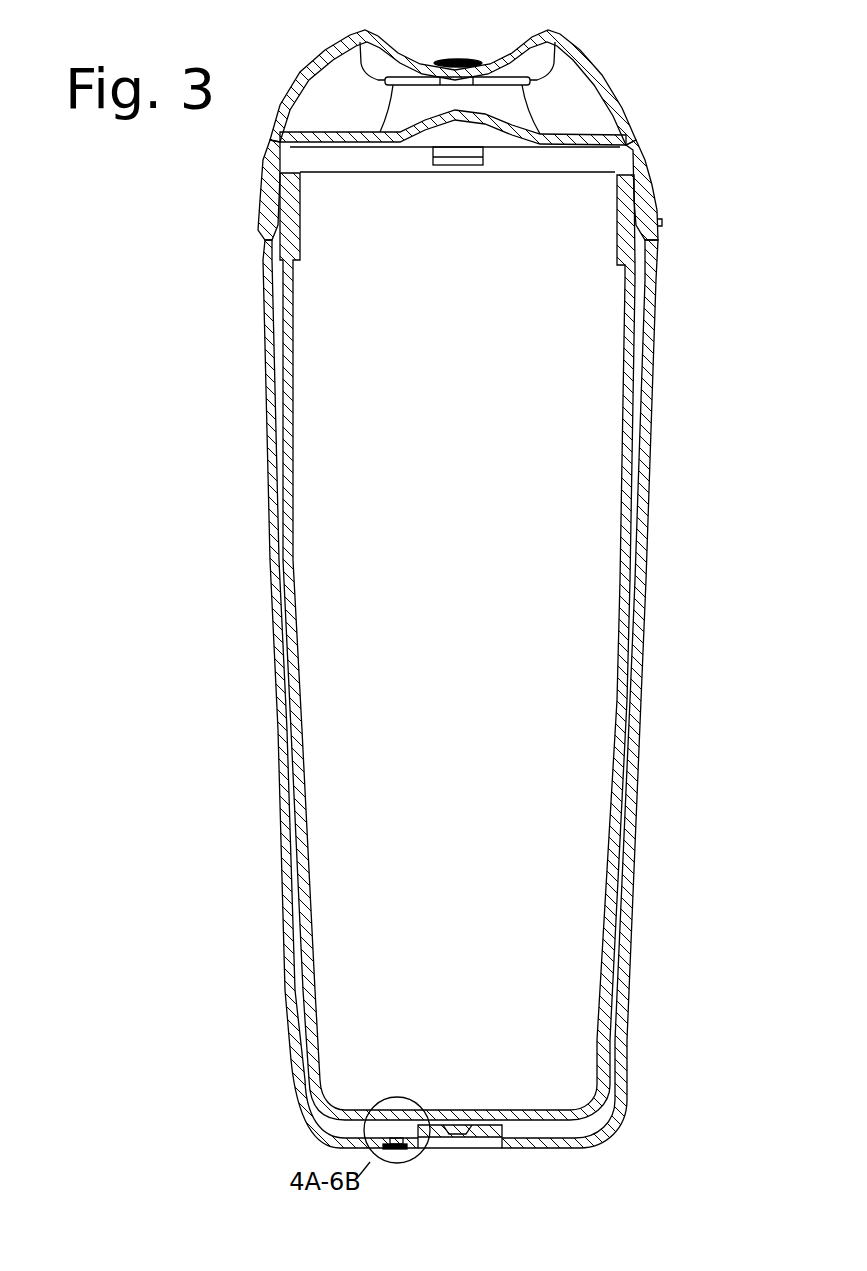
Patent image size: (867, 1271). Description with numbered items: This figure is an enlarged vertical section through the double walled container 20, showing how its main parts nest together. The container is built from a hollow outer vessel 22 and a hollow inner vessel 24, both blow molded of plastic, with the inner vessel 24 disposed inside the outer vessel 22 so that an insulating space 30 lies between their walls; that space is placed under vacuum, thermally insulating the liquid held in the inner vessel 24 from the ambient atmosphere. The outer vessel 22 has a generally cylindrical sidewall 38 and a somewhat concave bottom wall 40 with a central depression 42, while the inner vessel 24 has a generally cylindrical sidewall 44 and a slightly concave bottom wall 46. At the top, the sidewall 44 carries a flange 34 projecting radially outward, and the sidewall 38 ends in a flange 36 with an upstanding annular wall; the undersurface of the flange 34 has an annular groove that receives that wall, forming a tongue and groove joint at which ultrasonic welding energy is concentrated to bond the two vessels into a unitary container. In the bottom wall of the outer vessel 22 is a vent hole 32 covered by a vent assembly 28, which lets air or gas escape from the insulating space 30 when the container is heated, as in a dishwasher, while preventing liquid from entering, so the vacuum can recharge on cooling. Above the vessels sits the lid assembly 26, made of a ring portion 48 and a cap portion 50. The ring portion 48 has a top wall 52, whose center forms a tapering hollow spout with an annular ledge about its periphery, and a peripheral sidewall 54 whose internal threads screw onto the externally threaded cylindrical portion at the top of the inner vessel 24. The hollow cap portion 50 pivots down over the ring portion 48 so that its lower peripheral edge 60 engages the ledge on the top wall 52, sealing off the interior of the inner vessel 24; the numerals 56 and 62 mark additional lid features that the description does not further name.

The double walled container 20 is at (235, 587).
The outer vessel 22 is at (643, 503).
The inner vessel 24 is at (628, 480).
The lid assembly 26 is at (625, 84).
The vent assembly 28 is at (395, 1150).
The insulating space 30 is at (278, 352).
The vent hole 32 is at (397, 1143).
The flange of the inner vessel 34 is at (660, 222).
The flange of the outer vessel 36 is at (658, 240).
The sidewall 38 is at (657, 318).
The bottom wall 40 is at (537, 1143).
The central depression 42 is at (477, 1135).
The sidewall 44 is at (623, 390).
The bottom wall 46 is at (528, 1118).
The ring portion 48 is at (658, 197).
The cap portion 50 is at (303, 80).
The top wall 52 is at (347, 137).
The peripheral sidewall 54 is at (648, 172).
The inner wall upper portion 56 is at (627, 203).
The lower peripheral edge 60 is at (643, 140).
The lid cavity 62 is at (498, 100).